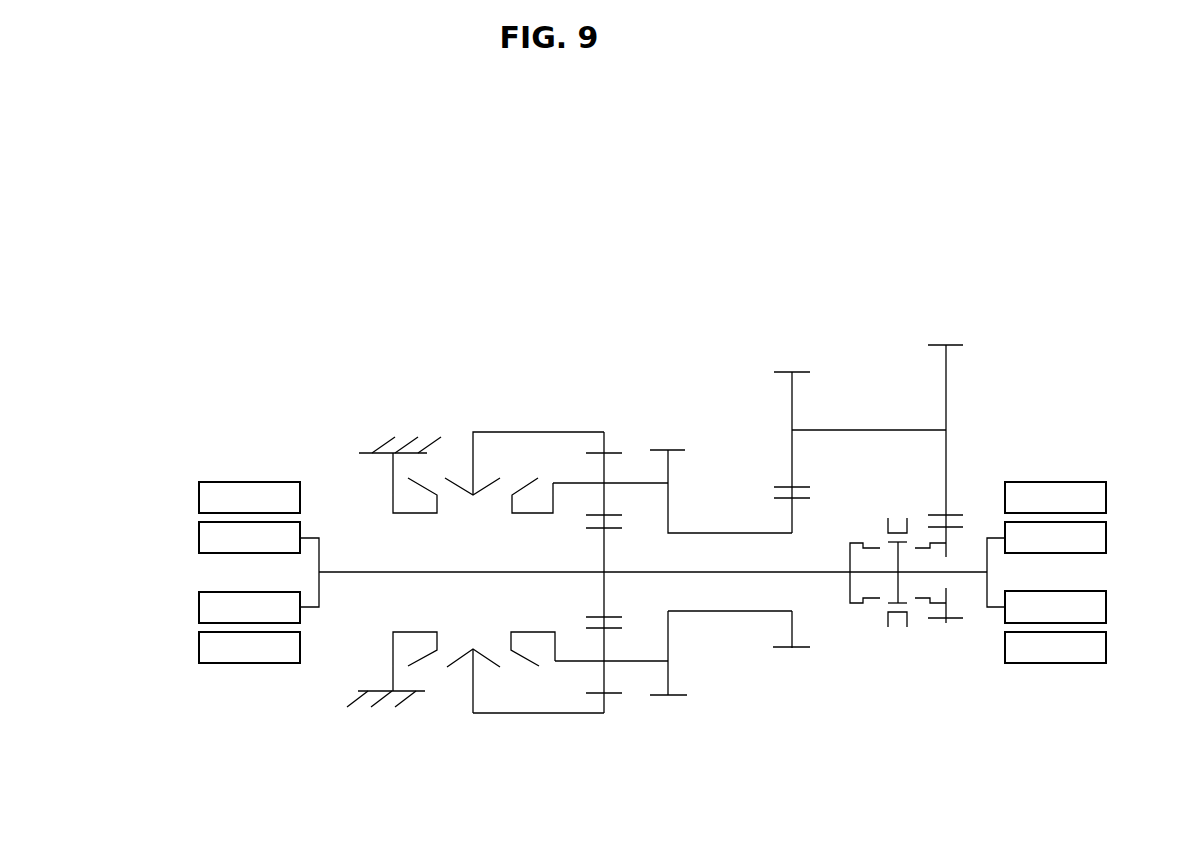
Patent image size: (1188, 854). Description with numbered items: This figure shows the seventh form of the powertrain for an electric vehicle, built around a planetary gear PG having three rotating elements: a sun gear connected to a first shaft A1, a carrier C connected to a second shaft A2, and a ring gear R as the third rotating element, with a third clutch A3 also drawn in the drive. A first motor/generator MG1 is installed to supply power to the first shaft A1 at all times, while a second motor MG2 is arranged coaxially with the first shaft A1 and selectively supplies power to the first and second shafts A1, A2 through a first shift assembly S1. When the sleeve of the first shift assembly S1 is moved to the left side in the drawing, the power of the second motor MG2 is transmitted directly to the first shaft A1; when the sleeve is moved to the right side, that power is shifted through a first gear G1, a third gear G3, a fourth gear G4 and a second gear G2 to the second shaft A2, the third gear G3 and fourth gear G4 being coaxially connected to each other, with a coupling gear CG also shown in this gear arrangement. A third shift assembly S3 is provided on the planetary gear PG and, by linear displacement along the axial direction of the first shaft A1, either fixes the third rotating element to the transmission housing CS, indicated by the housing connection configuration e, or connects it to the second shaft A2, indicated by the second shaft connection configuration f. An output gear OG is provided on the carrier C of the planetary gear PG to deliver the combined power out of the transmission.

The first motor/generator MG1 is at (259, 559).
The second motor MG2 is at (1046, 559).
The transmission housing CS is at (391, 445).
The third clutch A3 is at (539, 430).
The planetary gear PG is at (588, 418).
The ring gear R is at (613, 450).
The carrier C is at (634, 482).
The fourth gear G4 is at (802, 370).
The third gear G3 is at (949, 343).
The coupling gear CG is at (872, 605).
The first shift assembly S1 is at (896, 632).
The first gear G1 is at (950, 622).
The output gear OG is at (677, 697).
The first shaft A1 is at (718, 575).
The second gear G2 is at (795, 650).
The second shaft A2 is at (637, 664).
The second shaft connection configuration f is at (523, 670).
The third shift assembly S3 is at (458, 672).
The housing connection configuration e is at (429, 670).